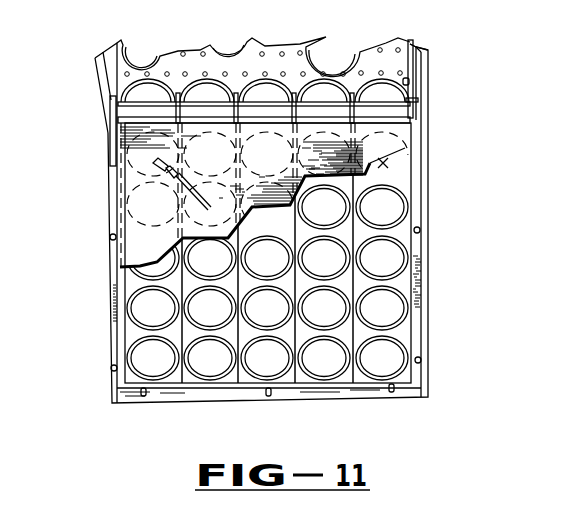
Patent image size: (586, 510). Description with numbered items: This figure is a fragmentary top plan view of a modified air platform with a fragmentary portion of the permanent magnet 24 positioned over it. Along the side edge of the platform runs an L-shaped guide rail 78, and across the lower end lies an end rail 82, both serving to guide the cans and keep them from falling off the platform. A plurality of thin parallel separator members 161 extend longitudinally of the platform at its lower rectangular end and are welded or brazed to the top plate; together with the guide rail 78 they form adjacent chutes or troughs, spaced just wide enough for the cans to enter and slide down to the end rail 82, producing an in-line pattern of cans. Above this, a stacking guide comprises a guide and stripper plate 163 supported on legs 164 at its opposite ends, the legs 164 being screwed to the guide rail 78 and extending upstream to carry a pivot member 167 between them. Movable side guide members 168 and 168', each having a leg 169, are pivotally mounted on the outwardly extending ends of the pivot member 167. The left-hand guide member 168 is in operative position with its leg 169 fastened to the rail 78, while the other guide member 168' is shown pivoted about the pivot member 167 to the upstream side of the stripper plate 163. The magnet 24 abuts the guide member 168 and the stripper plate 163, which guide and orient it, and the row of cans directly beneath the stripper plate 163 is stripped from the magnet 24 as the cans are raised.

The pivot member 167 is at (147, 100).
The legs 164 is at (117, 121).
The movable side guide member 168 is at (69, 104).
The legs 169 is at (410, 42).
The movable side guide member 168' is at (459, 73).
The guide and stripper plate 163 is at (374, 118).
The permanent magnet 24 is at (370, 158).
The guide rail 78 is at (412, 330).
The end rail 82 is at (293, 398).
The separator members 161 is at (290, 356).